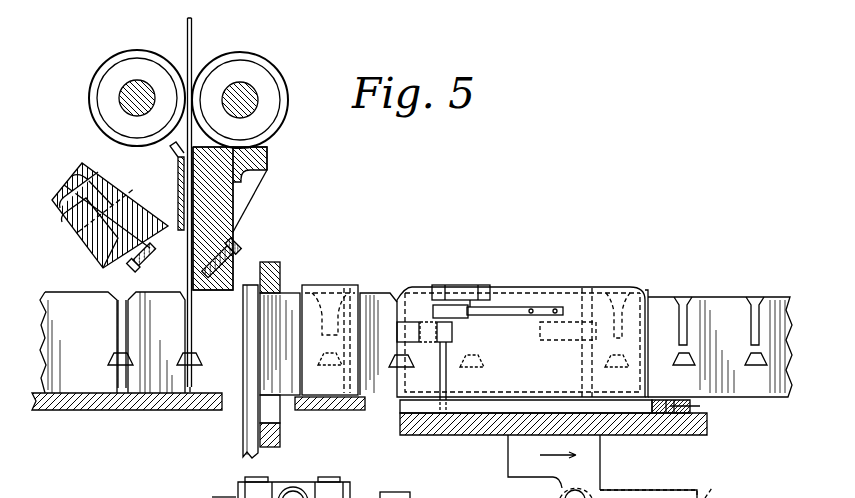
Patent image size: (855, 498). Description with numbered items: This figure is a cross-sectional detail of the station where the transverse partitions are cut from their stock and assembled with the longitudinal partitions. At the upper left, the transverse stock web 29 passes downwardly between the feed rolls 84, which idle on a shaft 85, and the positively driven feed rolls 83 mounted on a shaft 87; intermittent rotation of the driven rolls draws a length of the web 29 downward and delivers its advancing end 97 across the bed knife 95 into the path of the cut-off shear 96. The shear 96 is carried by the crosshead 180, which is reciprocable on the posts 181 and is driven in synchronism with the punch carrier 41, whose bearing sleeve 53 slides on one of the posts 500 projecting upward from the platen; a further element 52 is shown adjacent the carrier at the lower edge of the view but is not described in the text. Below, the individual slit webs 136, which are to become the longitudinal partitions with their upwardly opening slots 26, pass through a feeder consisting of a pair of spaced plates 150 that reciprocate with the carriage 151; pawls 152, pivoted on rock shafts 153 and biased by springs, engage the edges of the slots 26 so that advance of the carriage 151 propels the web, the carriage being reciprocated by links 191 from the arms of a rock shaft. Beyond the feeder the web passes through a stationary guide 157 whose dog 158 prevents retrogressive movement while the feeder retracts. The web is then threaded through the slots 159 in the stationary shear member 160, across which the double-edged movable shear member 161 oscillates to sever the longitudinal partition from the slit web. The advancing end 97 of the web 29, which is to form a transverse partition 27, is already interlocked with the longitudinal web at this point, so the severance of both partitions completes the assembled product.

The transverse stock web 29 is at (226, 36).
The feed rolls 84 is at (137, 65).
The shaft 85 is at (128, 100).
The feed rolls 83 is at (280, 84).
The shaft 87 is at (250, 106).
The posts 181 is at (72, 176).
The crosshead 180 is at (95, 238).
The cut-off shear 96 is at (146, 266).
The bed knife 95 is at (204, 280).
The upwardly opening slots 26 is at (116, 310).
The transverse partitions 27 is at (120, 346).
The advancing end 97 is at (193, 386).
The stationary shear members 160 is at (272, 262).
The slots 159 is at (288, 292).
The stationary guides 157 is at (336, 290).
The dog 158 is at (368, 312).
The plates 150 is at (514, 290).
The pawls 152 is at (456, 335).
The rock shafts 153 is at (448, 382).
The carriage 151 is at (660, 435).
The slit webs 136 is at (735, 308).
The links 191 is at (674, 487).
The movable shear members 161 is at (243, 436).
The posts 500 is at (258, 477).
The punch carrier 41 is at (300, 482).
The bearing sleeve 53 is at (358, 497).
The element 52 is at (210, 493).